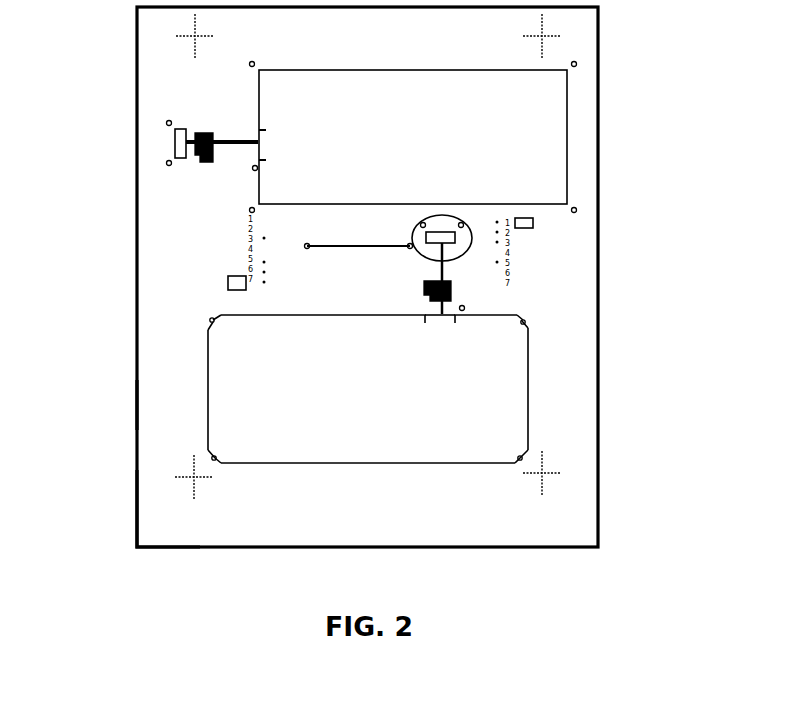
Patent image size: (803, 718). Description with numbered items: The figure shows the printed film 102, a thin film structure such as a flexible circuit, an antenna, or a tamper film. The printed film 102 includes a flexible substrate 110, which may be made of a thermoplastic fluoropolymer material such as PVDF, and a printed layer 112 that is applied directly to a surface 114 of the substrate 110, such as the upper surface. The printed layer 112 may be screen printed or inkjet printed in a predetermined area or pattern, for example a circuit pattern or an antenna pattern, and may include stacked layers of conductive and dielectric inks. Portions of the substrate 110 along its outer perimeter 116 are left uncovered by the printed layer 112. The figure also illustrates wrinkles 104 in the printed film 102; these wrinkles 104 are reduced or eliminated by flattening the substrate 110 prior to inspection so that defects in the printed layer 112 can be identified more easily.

The printed film 102 is at (568, 305).
The wrinkles 104 is at (470, 200).
The substrate 110 is at (565, 427).
The printed layer 112 is at (527, 135).
The surface 114 is at (165, 402).
The outer perimeter 116 is at (135, 485).